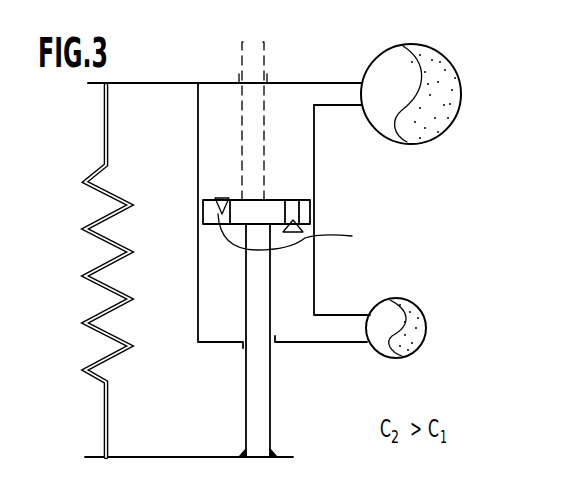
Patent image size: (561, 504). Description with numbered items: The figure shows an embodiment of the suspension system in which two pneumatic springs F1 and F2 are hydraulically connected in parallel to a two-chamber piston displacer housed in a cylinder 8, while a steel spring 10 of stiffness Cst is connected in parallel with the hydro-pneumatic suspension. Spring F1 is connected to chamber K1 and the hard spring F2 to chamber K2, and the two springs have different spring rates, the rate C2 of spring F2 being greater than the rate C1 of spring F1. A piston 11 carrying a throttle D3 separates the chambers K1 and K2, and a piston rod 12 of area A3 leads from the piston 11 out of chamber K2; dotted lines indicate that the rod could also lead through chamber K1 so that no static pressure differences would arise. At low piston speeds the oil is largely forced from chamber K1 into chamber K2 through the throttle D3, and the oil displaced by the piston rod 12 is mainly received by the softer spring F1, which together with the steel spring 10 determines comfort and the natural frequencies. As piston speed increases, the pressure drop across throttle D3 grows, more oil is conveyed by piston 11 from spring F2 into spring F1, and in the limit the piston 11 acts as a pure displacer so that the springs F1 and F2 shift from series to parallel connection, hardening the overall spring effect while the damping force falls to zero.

The housing 8 is at (198, 318).
The steel spring 10 is at (92, 328).
The piston 11 is at (275, 208).
The piston rod 12 is at (258, 359).
The chamber K1 is at (208, 152).
The chamber K2 is at (210, 284).
The chamber C1 is at (427, 55).
The chamber C2 is at (410, 304).
The throttle D3 is at (302, 232).
The pneumatic spring F1 is at (458, 116).
The pneumatic spring F2 is at (481, 349).
The dimension A3 is at (207, 394).
The spring stiffness Cst is at (54, 274).